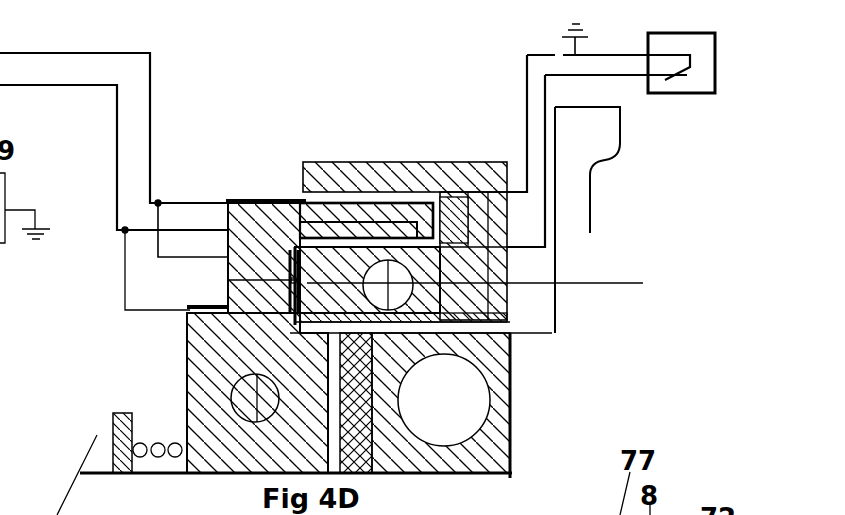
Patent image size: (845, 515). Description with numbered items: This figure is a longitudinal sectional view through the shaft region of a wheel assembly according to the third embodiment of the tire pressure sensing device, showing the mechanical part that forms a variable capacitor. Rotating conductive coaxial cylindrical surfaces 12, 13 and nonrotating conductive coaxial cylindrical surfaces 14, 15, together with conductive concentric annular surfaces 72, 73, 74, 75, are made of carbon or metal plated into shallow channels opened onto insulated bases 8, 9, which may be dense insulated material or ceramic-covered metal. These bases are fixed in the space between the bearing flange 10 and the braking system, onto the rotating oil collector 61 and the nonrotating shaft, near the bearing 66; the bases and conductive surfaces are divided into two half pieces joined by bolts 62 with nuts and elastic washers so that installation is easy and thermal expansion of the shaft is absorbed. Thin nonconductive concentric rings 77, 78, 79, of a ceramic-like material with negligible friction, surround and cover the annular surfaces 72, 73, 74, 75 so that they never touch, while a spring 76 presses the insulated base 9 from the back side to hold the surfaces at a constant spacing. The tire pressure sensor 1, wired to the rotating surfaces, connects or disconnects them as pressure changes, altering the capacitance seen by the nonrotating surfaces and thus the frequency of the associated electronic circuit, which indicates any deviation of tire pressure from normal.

The tire pressure sensor 1 is at (695, 77).
The insulated base 8 is at (453, 162).
The insulated base 9 is at (230, 233).
The bearing flange 10 is at (340, 428).
The conductive coaxial cylindrical surface 12 is at (322, 185).
The conductive coaxial cylindrical surface 13 is at (435, 183).
The conductive coaxial cylindrical surface 14 is at (347, 203).
The conductive coaxial cylindrical surface 15 is at (382, 243).
The rotating oil collector 61 is at (573, 202).
The bolt 62 is at (97, 333).
The bearing 66 is at (453, 388).
The conductive concentric annular surface 72 is at (307, 270).
The conductive concentric annular surface 73 is at (400, 318).
The conductive concentric annular surface 74 is at (297, 272).
The conductive concentric annular surface 75 is at (228, 298).
The spring 76 is at (157, 440).
The nonconductive concentric ring 77 is at (230, 230).
The nonconductive concentric ring 78 is at (228, 280).
The nonconductive concentric ring 79 is at (280, 333).